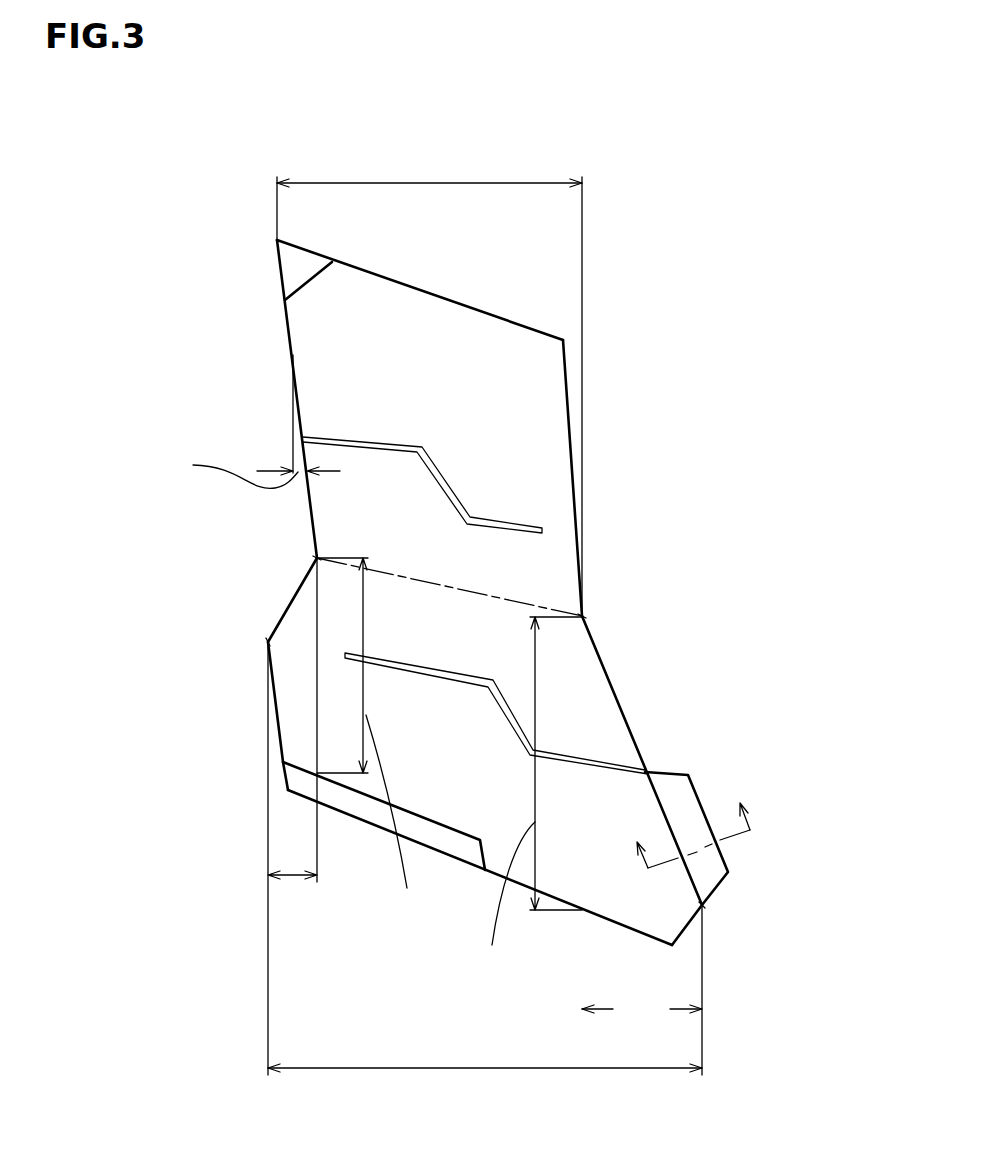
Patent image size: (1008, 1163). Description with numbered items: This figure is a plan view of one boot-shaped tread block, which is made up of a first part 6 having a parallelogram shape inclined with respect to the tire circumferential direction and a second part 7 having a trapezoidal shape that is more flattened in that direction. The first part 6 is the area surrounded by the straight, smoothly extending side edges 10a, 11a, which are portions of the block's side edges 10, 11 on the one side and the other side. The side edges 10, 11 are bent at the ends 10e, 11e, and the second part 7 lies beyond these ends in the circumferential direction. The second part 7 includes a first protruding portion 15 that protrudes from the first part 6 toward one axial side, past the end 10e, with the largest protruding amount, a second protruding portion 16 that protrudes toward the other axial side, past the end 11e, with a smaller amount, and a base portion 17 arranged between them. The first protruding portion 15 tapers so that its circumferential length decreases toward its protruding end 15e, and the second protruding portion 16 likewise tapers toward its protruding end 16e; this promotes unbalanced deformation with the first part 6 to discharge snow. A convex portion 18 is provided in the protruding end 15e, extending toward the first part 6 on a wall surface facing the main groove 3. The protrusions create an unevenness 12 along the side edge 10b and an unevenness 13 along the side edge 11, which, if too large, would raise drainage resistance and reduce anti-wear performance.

The main groove 3 is at (666, 567).
The first part 6 is at (497, 420).
The second part 7 is at (600, 717).
The side edge 10 is at (685, 478).
The side edge 10a is at (565, 383).
The side edge 10b is at (602, 662).
The end 10e is at (582, 616).
The side edge 11 is at (196, 399).
The side edge 11a is at (288, 332).
The end 11e is at (317, 558).
The unevenness 12 is at (632, 737).
The unevenness 13 is at (292, 600).
The first protruding portion 15 is at (612, 797).
The protruding end 15e is at (702, 905).
The second protruding portion 16 is at (298, 703).
The protruding end 16e is at (268, 642).
The base portion 17 is at (443, 622).
The convex portion 18 is at (705, 865).